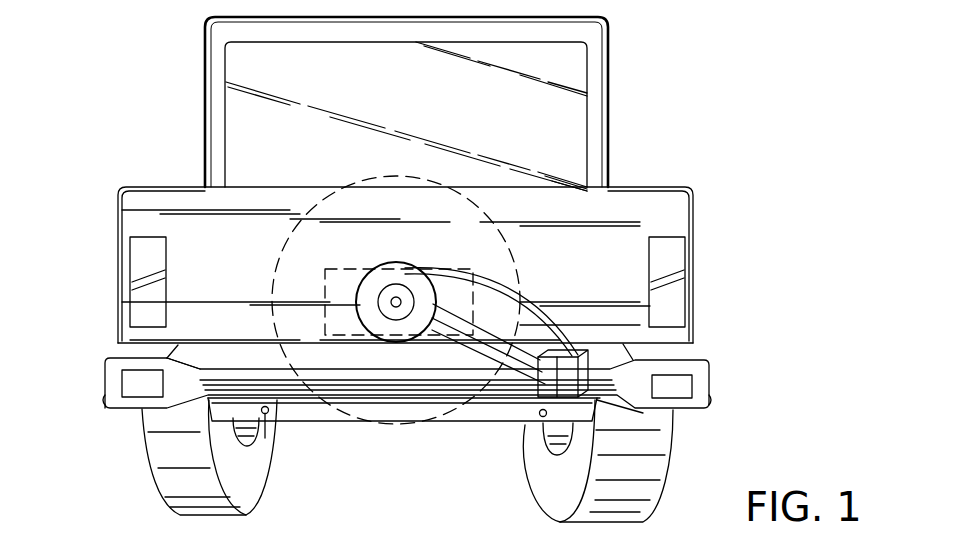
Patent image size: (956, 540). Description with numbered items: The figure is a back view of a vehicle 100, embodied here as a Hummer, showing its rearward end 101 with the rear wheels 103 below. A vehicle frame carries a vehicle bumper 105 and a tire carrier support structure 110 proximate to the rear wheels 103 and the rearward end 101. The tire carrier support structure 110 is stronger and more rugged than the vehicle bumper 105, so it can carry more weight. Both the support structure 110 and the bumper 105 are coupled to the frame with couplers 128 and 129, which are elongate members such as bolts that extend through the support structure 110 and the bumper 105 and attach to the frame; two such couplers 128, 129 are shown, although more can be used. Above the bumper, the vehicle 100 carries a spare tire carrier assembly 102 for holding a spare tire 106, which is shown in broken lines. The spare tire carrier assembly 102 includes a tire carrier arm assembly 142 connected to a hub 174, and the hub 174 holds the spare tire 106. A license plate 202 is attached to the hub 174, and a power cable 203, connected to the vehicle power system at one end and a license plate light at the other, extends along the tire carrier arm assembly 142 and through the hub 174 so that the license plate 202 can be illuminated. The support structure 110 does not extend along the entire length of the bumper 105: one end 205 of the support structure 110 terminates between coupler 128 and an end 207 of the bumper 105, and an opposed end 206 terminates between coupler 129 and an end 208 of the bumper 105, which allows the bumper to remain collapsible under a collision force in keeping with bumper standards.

The vehicle 100 is at (150, 134).
The rearward end 101 is at (716, 302).
The spare tire carrier assembly 102 is at (330, 162).
The rear wheels 103 is at (167, 500).
The vehicle bumper 105 is at (106, 370).
The spare tire 106 is at (445, 188).
The tire carrier support structure 110 is at (445, 403).
The coupler 128 is at (276, 440).
The coupler 129 is at (543, 417).
The tire carrier arm assembly 142 is at (452, 300).
The hub 174 is at (382, 281).
The license plate 202 is at (337, 269).
The power cable 203 is at (526, 300).
The end of support structure 205 is at (207, 393).
The opposed end of support structure 206 is at (601, 396).
The end of vehicle bumper 207 is at (106, 398).
The end of vehicle bumper 208 is at (709, 400).